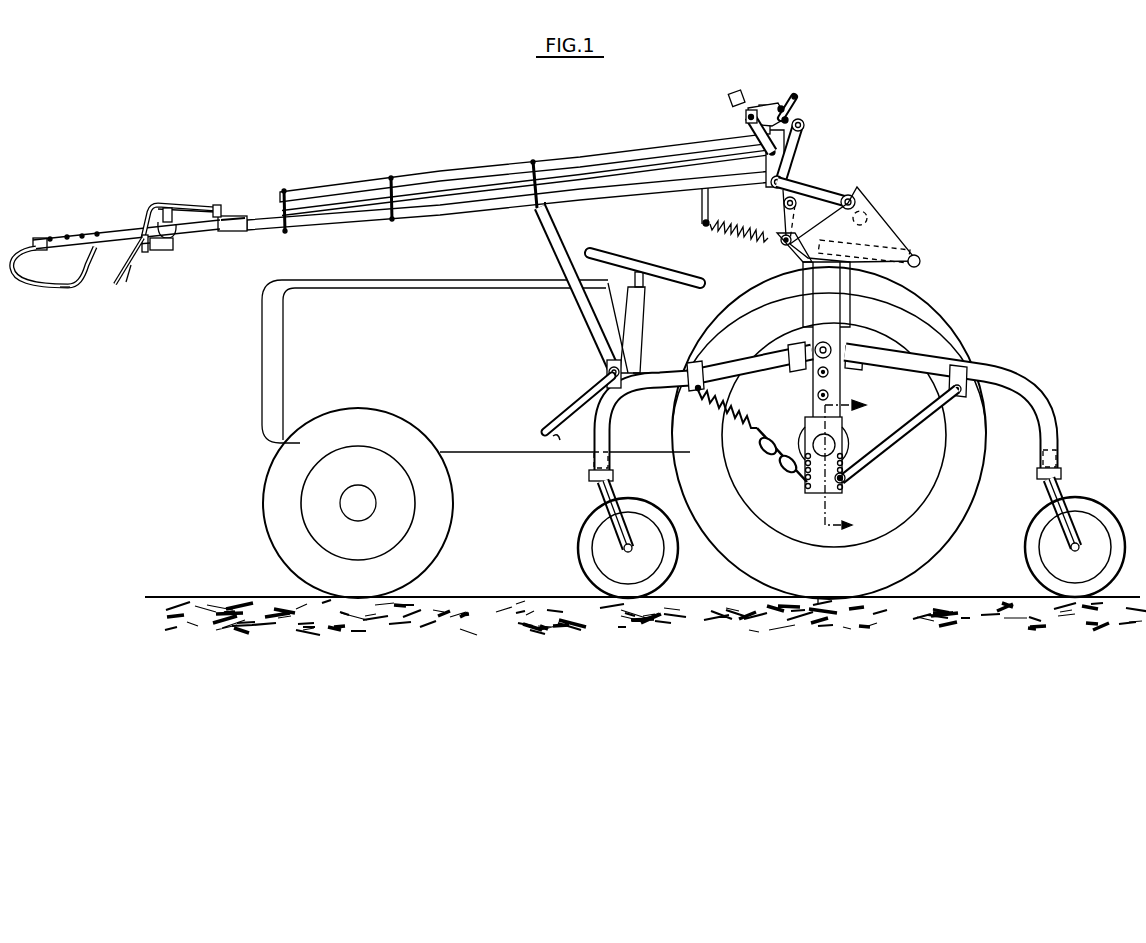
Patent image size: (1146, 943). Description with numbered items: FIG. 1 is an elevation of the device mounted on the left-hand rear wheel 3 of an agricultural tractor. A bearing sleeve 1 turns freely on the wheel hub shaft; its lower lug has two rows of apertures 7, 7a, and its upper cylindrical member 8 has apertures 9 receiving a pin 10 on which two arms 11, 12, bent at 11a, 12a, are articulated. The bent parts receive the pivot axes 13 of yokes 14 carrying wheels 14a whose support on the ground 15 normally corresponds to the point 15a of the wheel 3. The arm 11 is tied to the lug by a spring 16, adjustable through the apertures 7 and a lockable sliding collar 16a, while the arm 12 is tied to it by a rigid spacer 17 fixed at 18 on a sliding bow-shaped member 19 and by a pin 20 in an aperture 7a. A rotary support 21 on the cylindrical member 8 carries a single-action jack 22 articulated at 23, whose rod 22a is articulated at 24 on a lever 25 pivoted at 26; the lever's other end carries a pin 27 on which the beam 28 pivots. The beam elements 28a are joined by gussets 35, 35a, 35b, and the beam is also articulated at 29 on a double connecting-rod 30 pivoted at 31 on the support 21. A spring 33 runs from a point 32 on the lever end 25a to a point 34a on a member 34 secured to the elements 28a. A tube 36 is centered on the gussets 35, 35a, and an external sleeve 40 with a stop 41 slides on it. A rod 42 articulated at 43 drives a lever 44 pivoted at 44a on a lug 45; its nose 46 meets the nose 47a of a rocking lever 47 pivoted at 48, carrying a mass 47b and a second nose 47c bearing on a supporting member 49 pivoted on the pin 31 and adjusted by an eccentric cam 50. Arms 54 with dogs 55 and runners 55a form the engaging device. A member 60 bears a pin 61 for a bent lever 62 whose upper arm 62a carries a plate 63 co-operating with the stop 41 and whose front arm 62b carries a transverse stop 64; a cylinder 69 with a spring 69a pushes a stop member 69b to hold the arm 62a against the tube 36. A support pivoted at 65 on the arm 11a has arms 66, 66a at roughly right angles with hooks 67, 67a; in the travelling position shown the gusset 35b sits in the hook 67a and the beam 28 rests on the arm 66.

The bearing sleeve 1 is at (810, 434).
The left-hand rear wheel 3 is at (937, 334).
The apertures 7 is at (806, 486).
The apertures 7a is at (840, 464).
The cylindrical member 8 is at (818, 374).
The apertures 9 is at (818, 397).
The pin 10 is at (815, 345).
The arm 11 is at (740, 368).
The bent part of arm 11a is at (606, 412).
The arm 12 is at (1005, 378).
The bent part of arm 12a is at (1050, 437).
The pivot axes 13 is at (590, 473).
The yokes 14 is at (603, 501).
The wheel 14a is at (578, 548).
The ground 15 is at (625, 598).
The point of support 15a is at (818, 598).
The spring 16 is at (733, 433).
The sliding collar 16a is at (688, 375).
The rigid spacer 17 is at (893, 440).
The fixing point 18 is at (965, 393).
The bow-shaped member 19 is at (960, 372).
The pin 20 is at (845, 484).
The rotary support 21 is at (928, 253).
The single-action jack 22 is at (895, 246).
The jack rod 22a is at (787, 246).
The articulation 23 is at (918, 264).
The articulation 24 is at (800, 242).
The lever 25 is at (792, 161).
The end of lever 25a is at (784, 221).
The pivot 26 is at (796, 207).
The pin 27 is at (806, 126).
The beam 28 is at (631, 147).
The constituent elements 28a is at (420, 180).
The articulation 29 is at (771, 187).
The double connecting-rod 30 is at (847, 196).
The pivot pin 31 is at (868, 200).
The fixing point 32 is at (772, 238).
The spring 33 is at (736, 236).
The member 34 is at (702, 204).
The fixing point 34a is at (705, 226).
The gusset 35 is at (285, 191).
The gusset 35a is at (392, 178).
The gusset 35b is at (535, 161).
The tube 36 is at (312, 215).
The external sleeve 40 is at (233, 232).
The stop 41 is at (230, 216).
The rod 42 is at (578, 174).
The articulation 43 is at (771, 155).
The lever 44 is at (748, 132).
The pivot 44a is at (746, 113).
The lug 45 is at (757, 106).
The nose 46 is at (766, 105).
The rocking lever 47 is at (789, 96).
The nose 47a is at (789, 119).
The mass 47b is at (731, 93).
The second nose 47c is at (797, 99).
The pivot 48 is at (786, 110).
The supporting member 49 is at (878, 194).
The eccentric cam 50 is at (870, 218).
The arms 54 is at (107, 233).
The teeth or dogs 55 is at (62, 238).
The runner 55a is at (73, 289).
The member 60 is at (166, 248).
The pin 61 is at (167, 208).
The bent lever 62 is at (147, 203).
The upper arm 62a is at (197, 207).
The front arm 62b is at (126, 283).
The small plate 63 is at (217, 205).
The transverse stop 64 is at (118, 285).
The pivot 65 is at (609, 380).
The arm 66 is at (572, 400).
The arm 66a is at (556, 229).
The hook 67 is at (560, 438).
The hook 67a is at (538, 213).
The cylinder 69 is at (166, 248).
The spring 69a is at (140, 244).
The stop member 69b is at (145, 253).